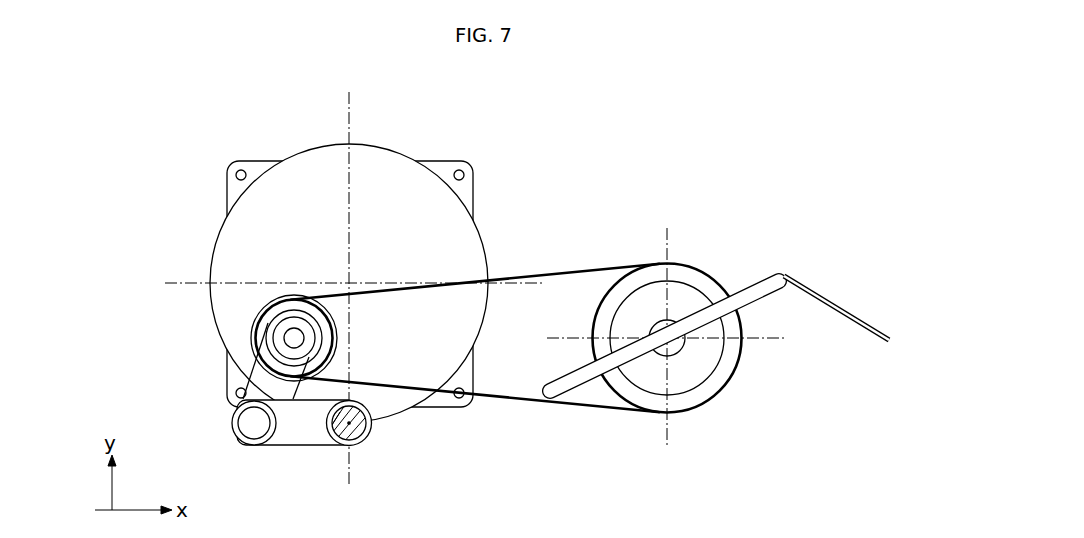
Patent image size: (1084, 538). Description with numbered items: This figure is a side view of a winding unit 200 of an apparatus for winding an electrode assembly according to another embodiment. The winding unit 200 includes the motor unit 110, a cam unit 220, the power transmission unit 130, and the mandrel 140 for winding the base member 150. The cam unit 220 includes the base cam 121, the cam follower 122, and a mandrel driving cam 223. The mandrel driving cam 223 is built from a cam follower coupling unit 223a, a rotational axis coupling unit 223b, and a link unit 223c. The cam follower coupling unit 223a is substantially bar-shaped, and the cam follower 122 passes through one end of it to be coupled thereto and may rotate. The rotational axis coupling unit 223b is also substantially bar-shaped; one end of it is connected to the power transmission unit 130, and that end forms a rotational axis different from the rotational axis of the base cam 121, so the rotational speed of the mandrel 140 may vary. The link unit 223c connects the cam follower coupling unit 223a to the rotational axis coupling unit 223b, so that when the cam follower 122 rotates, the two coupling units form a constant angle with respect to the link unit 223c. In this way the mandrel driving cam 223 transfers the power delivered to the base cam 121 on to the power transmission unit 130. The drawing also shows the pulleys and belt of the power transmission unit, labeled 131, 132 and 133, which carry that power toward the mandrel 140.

The winding unit 200 is at (160, 77).
The motor unit 110 is at (450, 163).
The base cam 121 is at (377, 158).
The cam follower 122 is at (367, 433).
The power transmission unit 130 is at (544, 262).
The drive pulley 131 is at (256, 327).
The driven pulley 132 is at (687, 298).
The belt 133 is at (588, 269).
The mandrel 140 is at (760, 288).
The base member 150 is at (858, 313).
The cam unit 220 is at (304, 136).
The mandrel driving cam 223 is at (251, 423).
The cam follower coupling unit 223a is at (282, 437).
The rotational axis coupling unit 223b is at (258, 389).
The link unit 223c is at (248, 427).